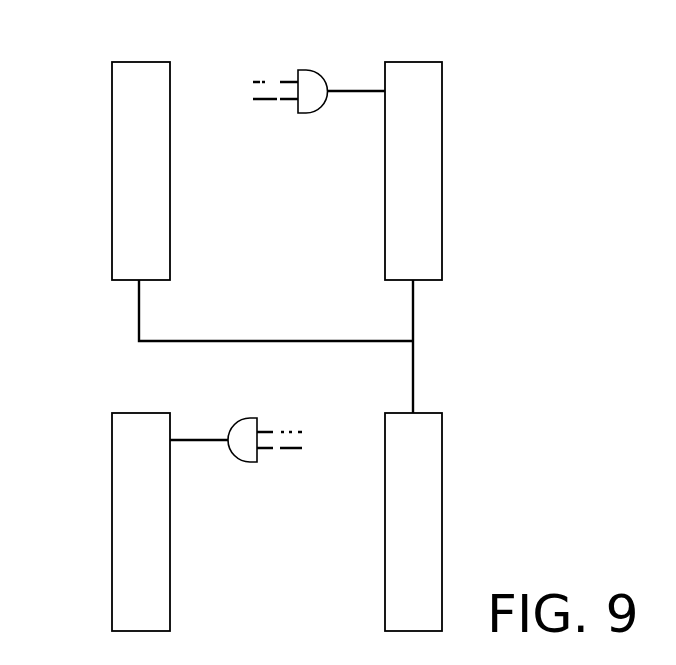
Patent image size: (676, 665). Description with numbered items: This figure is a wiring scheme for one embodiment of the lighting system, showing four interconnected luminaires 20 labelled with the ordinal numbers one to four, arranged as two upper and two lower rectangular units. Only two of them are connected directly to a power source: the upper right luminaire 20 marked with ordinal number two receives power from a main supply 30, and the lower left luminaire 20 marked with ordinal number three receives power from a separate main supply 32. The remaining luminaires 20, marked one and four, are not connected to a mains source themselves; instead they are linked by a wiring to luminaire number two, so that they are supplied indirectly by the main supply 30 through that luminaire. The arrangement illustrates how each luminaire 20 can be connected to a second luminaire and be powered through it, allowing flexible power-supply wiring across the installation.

The luminaire 20 is at (112, 160).
The main supply 30 is at (264, 78).
The main supply 32 is at (287, 452).